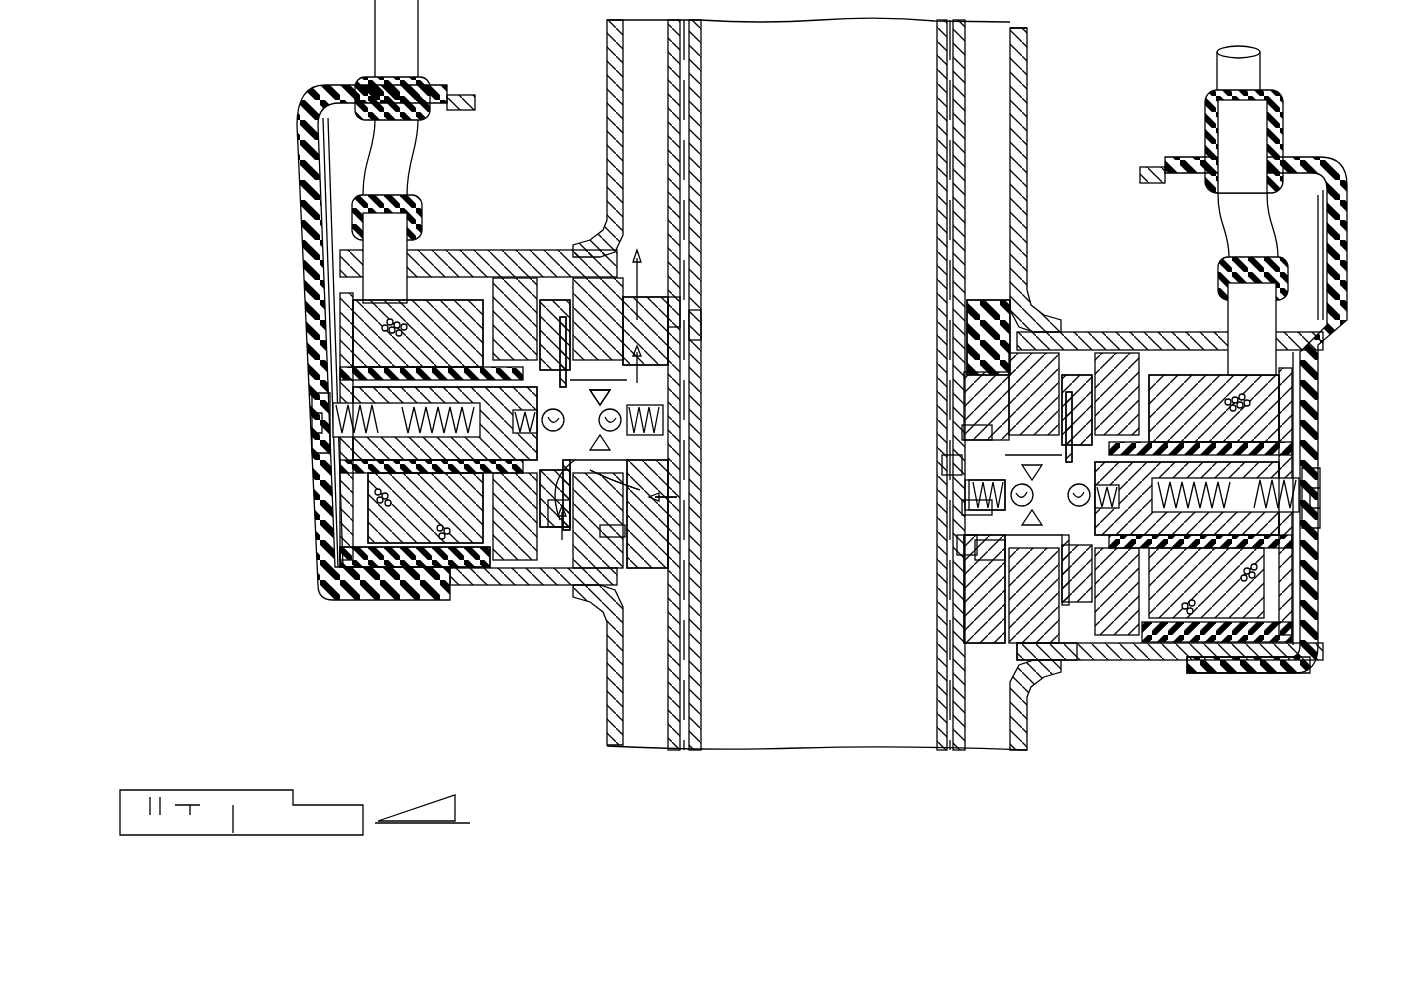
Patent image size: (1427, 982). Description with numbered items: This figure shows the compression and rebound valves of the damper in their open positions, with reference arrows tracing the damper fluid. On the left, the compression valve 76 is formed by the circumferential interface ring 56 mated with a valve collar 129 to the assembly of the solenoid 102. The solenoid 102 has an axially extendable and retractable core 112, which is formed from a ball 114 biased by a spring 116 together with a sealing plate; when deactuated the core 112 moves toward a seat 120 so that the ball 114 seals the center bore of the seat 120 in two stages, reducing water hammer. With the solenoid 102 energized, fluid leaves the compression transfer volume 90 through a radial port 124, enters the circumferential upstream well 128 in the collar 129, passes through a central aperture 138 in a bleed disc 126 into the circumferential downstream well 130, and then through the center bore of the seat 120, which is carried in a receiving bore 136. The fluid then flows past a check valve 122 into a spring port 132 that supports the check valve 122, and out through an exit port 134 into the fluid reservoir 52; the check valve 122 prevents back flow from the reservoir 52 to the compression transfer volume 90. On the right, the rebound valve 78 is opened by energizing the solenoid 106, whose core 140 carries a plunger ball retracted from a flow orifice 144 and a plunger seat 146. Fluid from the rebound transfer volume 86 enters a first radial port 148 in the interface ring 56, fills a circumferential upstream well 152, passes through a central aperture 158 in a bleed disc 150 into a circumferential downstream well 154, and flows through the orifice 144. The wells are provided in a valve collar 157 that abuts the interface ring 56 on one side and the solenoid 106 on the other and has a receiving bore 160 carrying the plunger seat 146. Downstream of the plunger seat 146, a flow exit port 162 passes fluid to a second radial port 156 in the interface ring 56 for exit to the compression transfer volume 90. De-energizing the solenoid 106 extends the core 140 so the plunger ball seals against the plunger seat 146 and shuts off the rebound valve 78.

The fluid reservoir 52 is at (660, 215).
The circumferential interface ring 56 is at (683, 515).
The compression valve 76 is at (281, 467).
The rebound valve 78 is at (1333, 548).
The rebound transfer volume 86 is at (682, 132).
The compression transfer volume 90 is at (692, 670).
The solenoid 102 is at (381, 522).
The solenoid 106 is at (1213, 637).
The core 112 is at (483, 410).
The ball 114 is at (553, 408).
The spring 116 is at (478, 463).
The seat 120 is at (687, 442).
The check valve 122 is at (688, 365).
The radial port 124 is at (672, 507).
The bleed disc 126 is at (660, 538).
The circumferential upstream well 128 is at (645, 492).
The valve collar 129 is at (575, 530).
The circumferential downstream well 130 is at (560, 528).
The spring port 132 is at (690, 398).
The exit port 134 is at (683, 317).
The receiving bore 136 is at (693, 330).
The central aperture 138 is at (563, 300).
The core 140 is at (1178, 473).
The flow orifice 144 is at (977, 507).
The plunger seat 146 is at (987, 490).
The first radial port 148 is at (963, 433).
The bleed disc 150 is at (953, 465).
The circumferential upstream well 152 is at (985, 424).
The circumferential downstream well 154 is at (1065, 383).
The second radial port 156 is at (987, 550).
The valve collar 157 is at (1075, 422).
The central aperture 158 is at (1075, 493).
The receiving bore 160 is at (1027, 641).
The flow exit port 162 is at (963, 543).